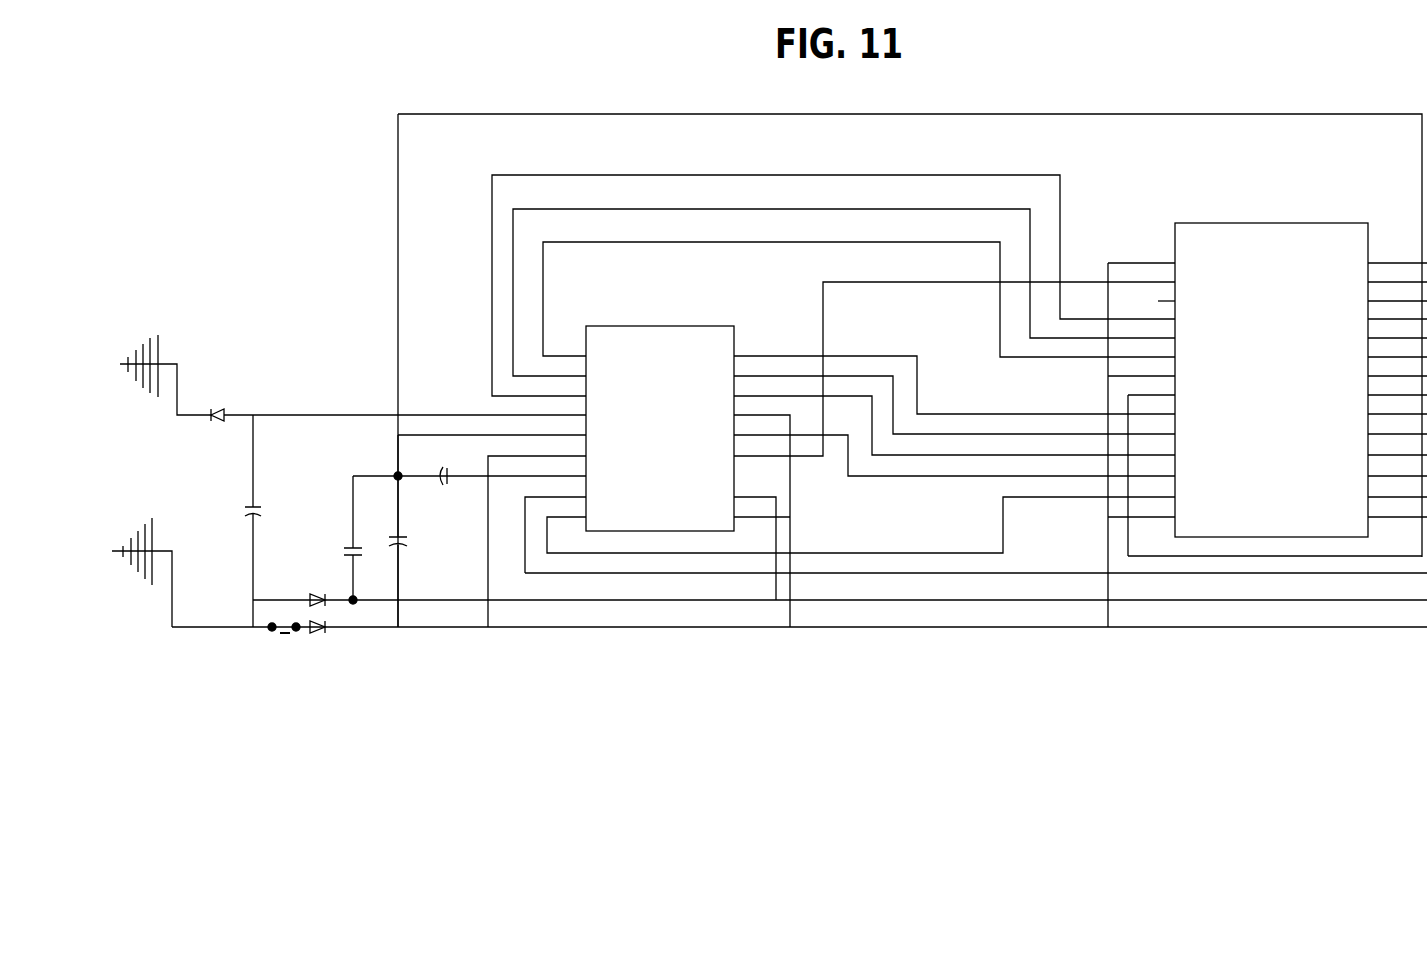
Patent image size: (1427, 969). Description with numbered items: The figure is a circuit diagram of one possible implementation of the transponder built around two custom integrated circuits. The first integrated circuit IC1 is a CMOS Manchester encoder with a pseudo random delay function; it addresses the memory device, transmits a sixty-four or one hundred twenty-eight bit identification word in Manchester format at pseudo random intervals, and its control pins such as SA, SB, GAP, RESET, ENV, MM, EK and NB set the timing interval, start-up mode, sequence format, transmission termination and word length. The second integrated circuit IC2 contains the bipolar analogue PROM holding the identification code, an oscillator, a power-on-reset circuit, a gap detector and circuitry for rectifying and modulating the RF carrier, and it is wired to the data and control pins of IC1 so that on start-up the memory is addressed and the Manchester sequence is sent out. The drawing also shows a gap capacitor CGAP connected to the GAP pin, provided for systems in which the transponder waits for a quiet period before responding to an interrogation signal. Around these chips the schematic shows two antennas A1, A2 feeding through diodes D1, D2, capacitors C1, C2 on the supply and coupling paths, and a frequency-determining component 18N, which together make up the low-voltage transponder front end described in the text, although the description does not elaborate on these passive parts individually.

The first integrated circuit IC1 is at (1271, 380).
The second integrated circuit IC2 is at (666, 428).
The capacitor C1 (10P) C1 is at (268, 518).
The capacitor C2 (1U) C2 is at (410, 531).
The gap capacitor CGAP is at (326, 538).
The diode D1 is at (296, 627).
The diode D2 is at (237, 401).
The antenna A1 is at (142, 572).
The antenna A2 is at (165, 378).
The crystal/inductor 18N is at (449, 493).